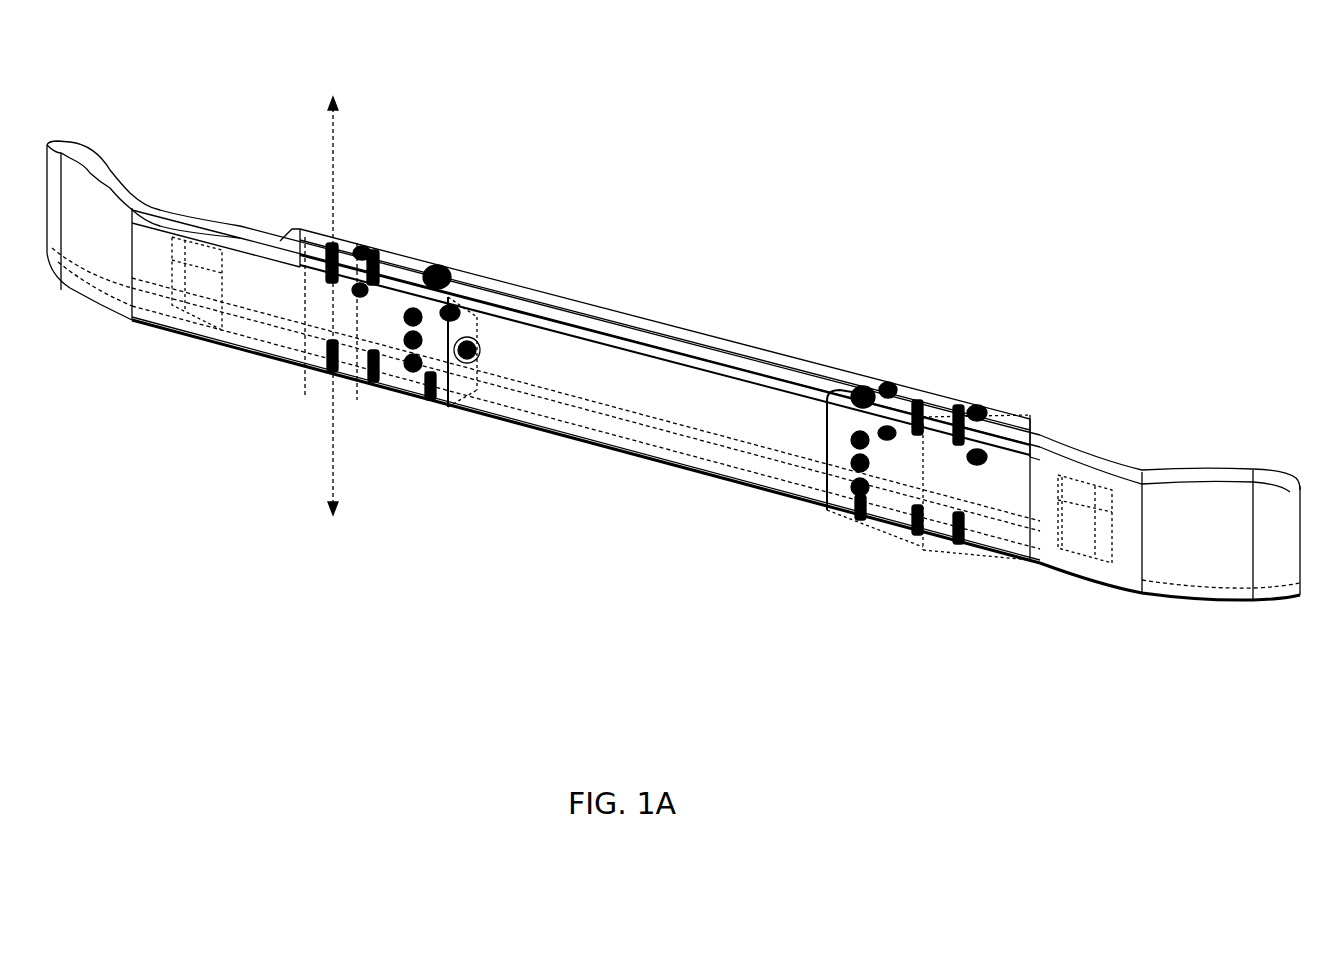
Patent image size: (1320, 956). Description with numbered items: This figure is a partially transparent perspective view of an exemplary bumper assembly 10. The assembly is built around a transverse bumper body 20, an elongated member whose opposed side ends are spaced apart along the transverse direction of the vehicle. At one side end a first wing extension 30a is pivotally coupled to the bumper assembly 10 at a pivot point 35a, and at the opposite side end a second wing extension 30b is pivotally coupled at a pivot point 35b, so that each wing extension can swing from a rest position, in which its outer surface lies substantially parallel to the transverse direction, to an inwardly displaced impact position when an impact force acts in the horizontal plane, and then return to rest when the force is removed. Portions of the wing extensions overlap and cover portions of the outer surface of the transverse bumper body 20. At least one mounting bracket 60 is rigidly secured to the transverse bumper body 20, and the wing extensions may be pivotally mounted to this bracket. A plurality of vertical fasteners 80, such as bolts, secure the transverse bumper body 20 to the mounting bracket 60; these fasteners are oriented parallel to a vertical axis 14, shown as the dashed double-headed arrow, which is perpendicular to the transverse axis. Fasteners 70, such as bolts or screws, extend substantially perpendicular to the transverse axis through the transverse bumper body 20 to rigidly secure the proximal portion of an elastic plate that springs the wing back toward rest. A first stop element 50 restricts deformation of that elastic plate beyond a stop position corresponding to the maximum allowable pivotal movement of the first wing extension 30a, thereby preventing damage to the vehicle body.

The bumper assembly 10 is at (124, 116).
The vertical axis 14 is at (328, 170).
The transverse bumper body 20 is at (637, 397).
The first wing extension 30a is at (1213, 580).
The second wing extension 30b is at (130, 227).
The pivot point 35a is at (973, 410).
The pivot point 35b is at (343, 230).
The first stop element 50 is at (1013, 492).
The mounting bracket 60 is at (690, 337).
The fastener 70 is at (468, 352).
The vertical fastener 80 is at (443, 266).